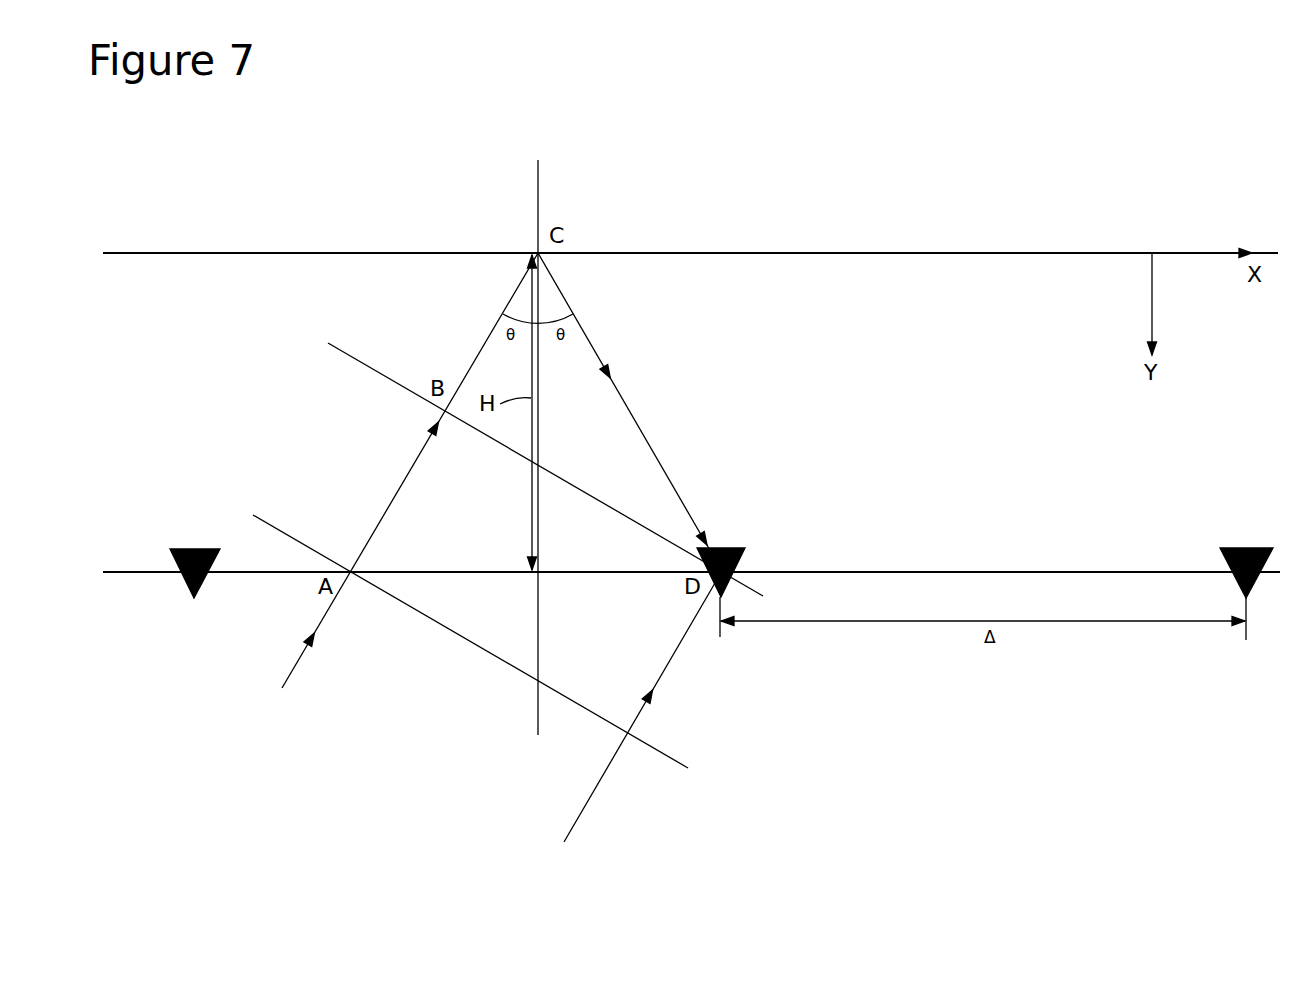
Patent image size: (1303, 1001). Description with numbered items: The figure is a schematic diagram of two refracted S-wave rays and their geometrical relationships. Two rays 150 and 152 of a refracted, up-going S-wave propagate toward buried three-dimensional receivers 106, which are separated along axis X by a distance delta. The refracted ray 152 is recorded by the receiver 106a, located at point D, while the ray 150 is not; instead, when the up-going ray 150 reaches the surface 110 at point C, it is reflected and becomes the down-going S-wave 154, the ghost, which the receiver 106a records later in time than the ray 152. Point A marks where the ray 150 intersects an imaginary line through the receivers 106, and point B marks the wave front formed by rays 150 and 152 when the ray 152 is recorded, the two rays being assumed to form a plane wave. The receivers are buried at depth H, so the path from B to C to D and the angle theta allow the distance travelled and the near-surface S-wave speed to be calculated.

The surface 110 is at (1000, 252).
The refracted S-wave ray 150 is at (303, 663).
The refracted S-wave ray 152 is at (603, 777).
The down-going S-wave 154 is at (593, 343).
The receivers 106 is at (182, 587).
The receiver 106a is at (726, 547).